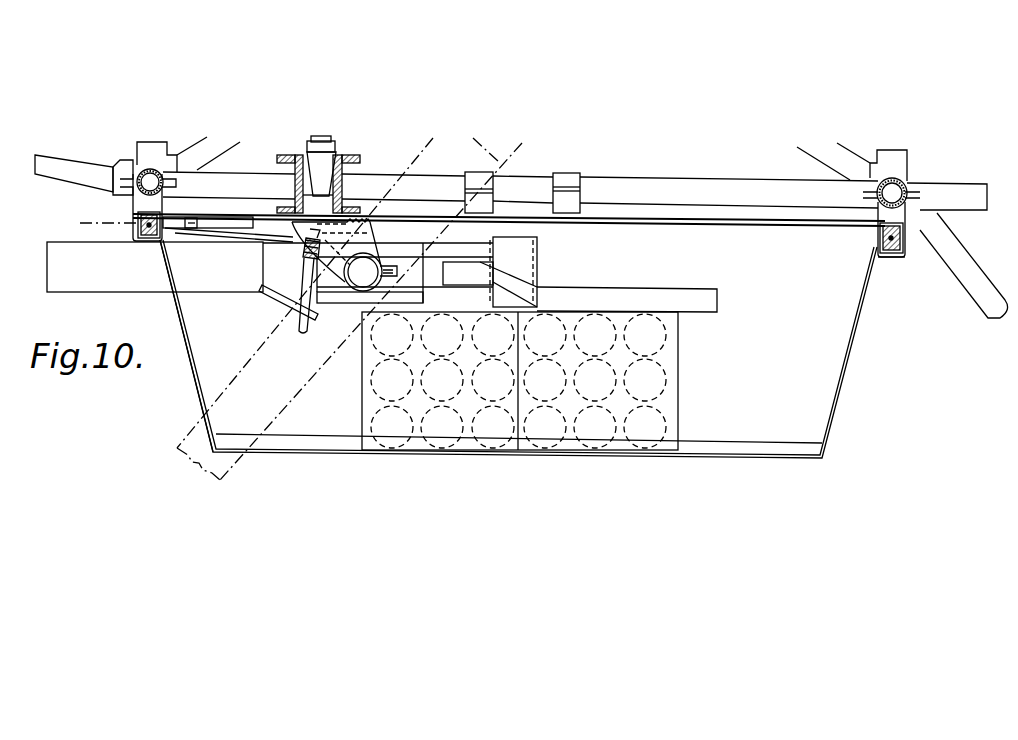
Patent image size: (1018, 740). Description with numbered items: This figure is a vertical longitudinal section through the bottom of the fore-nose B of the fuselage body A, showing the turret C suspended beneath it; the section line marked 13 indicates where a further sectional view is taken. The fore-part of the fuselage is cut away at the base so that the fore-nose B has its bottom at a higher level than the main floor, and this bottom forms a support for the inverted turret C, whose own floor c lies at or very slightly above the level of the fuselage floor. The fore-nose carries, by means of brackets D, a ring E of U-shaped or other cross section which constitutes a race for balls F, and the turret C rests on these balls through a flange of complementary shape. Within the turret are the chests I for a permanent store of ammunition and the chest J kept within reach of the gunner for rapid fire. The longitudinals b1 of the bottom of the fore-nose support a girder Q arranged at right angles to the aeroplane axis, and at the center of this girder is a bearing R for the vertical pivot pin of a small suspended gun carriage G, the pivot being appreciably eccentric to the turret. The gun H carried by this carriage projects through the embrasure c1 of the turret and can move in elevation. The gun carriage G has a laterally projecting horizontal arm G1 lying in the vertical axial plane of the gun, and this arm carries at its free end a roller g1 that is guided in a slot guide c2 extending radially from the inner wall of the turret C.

The fuselage body A is at (977, 283).
The fore-nose B is at (817, 145).
The longitudinals b1 is at (674, 188).
The turret C is at (843, 360).
The floor of the turret c is at (878, 242).
The embrasure c1 is at (195, 377).
The slot guide c2 is at (223, 228).
The brackets D is at (140, 198).
The ring E is at (895, 252).
The balls F is at (878, 225).
The gun carriage G is at (303, 227).
The horizontal arm G1 is at (263, 231).
The roller g1 is at (193, 228).
The gun H is at (103, 283).
The chests I is at (672, 366).
The chest J is at (318, 183).
The girder Q is at (343, 180).
The bearing R is at (303, 158).
The section line 13- 13 is at (110, 217).